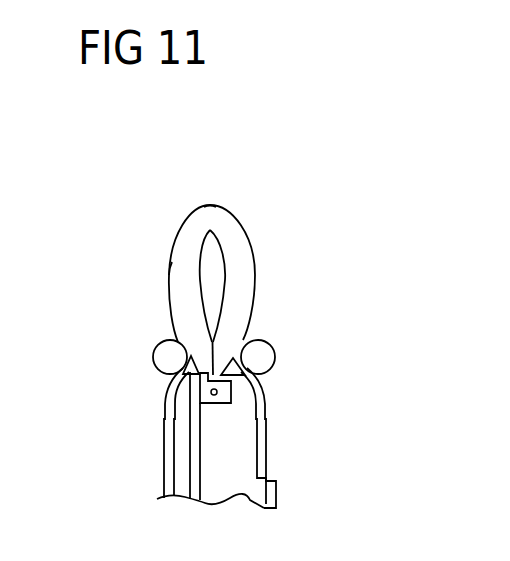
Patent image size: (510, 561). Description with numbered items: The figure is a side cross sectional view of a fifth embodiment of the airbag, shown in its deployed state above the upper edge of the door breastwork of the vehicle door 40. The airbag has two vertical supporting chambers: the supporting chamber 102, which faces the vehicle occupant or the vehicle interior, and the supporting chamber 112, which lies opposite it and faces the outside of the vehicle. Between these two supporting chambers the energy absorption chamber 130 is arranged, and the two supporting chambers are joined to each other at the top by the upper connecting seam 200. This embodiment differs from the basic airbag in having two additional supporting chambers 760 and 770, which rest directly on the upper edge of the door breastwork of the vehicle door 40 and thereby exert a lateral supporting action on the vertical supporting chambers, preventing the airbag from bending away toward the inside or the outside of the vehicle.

The vehicle door 40 is at (267, 440).
The supporting chamber 102 is at (228, 240).
The supporting chamber 112 is at (192, 255).
The energy absorption chamber 130 is at (217, 285).
The upper connecting seam 200 is at (212, 205).
The additional supporting chamber 760 is at (257, 354).
The additional supporting chamber 770 is at (163, 356).